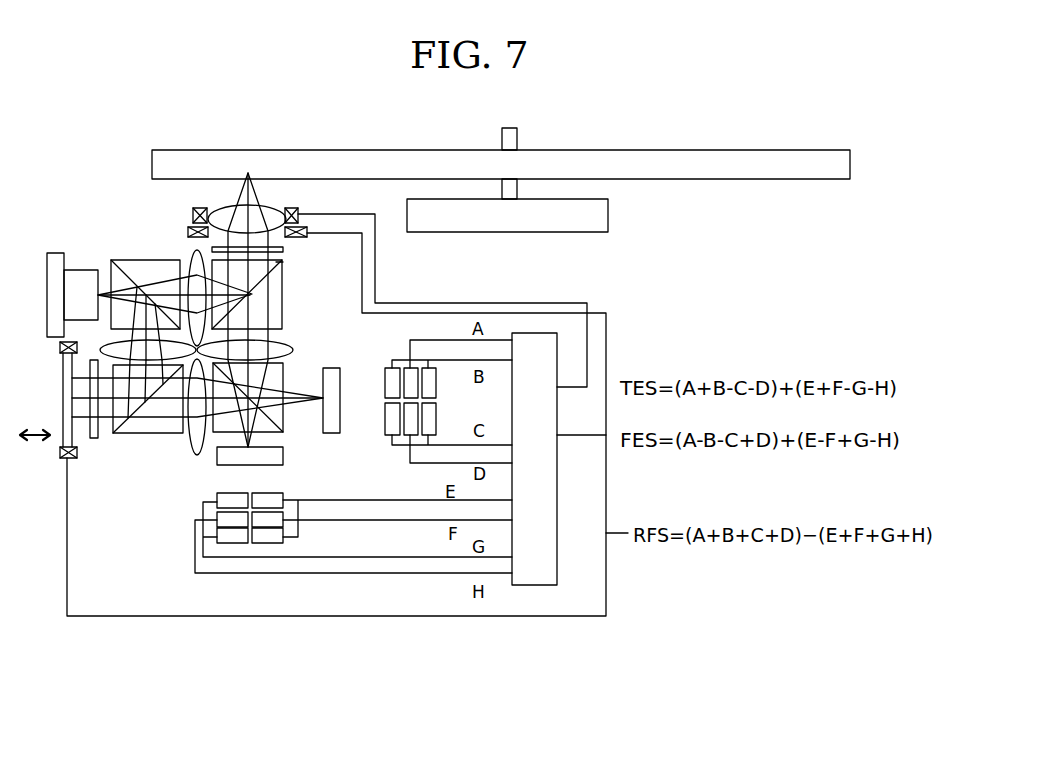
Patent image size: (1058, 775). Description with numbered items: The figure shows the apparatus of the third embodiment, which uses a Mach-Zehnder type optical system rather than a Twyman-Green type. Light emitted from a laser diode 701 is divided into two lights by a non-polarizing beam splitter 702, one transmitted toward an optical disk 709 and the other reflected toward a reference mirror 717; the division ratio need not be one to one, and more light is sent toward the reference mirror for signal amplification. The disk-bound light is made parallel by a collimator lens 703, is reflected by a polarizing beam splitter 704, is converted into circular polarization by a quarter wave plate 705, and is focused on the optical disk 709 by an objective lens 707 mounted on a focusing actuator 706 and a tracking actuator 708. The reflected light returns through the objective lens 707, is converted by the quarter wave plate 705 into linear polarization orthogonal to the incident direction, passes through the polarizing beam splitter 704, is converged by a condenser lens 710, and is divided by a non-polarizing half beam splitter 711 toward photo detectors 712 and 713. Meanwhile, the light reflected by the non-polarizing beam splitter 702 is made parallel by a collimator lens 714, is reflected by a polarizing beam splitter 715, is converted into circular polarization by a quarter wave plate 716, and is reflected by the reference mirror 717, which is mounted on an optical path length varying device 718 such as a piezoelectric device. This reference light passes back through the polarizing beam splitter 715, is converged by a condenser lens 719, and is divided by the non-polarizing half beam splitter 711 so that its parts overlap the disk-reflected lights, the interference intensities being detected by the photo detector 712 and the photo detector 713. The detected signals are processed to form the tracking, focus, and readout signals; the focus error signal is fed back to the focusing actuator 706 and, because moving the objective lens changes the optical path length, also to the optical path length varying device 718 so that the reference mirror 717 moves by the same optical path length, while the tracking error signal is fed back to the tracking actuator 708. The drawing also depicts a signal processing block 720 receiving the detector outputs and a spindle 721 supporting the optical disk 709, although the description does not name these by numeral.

The laser diode 701 is at (50, 253).
The non-polarizing beam splitter 702 is at (165, 260).
The collimator lens 703 is at (197, 253).
The polarizing beam splitter 704 is at (282, 313).
The quarter wave plate 705 is at (283, 262).
The focusing actuator 706 is at (291, 207).
The objective lens 707 is at (228, 205).
The tracking actuator 708 is at (285, 250).
The optical disk 709 is at (305, 149).
The condenser lens 710 is at (290, 348).
The non-polarizing half beam splitter 711 is at (282, 420).
The photo detector 712 is at (352, 400).
The photo detector 713 is at (250, 470).
The collimator lens 714 is at (118, 348).
The polarizing beam splitter 715 is at (148, 412).
The quarter wave plate 716 is at (97, 440).
The reference mirror 717 is at (48, 394).
The optical path length varying device 718 is at (58, 453).
The condenser lens 719 is at (193, 442).
The signal processing circuit 720 is at (557, 562).
The spindle motor 721 is at (533, 232).